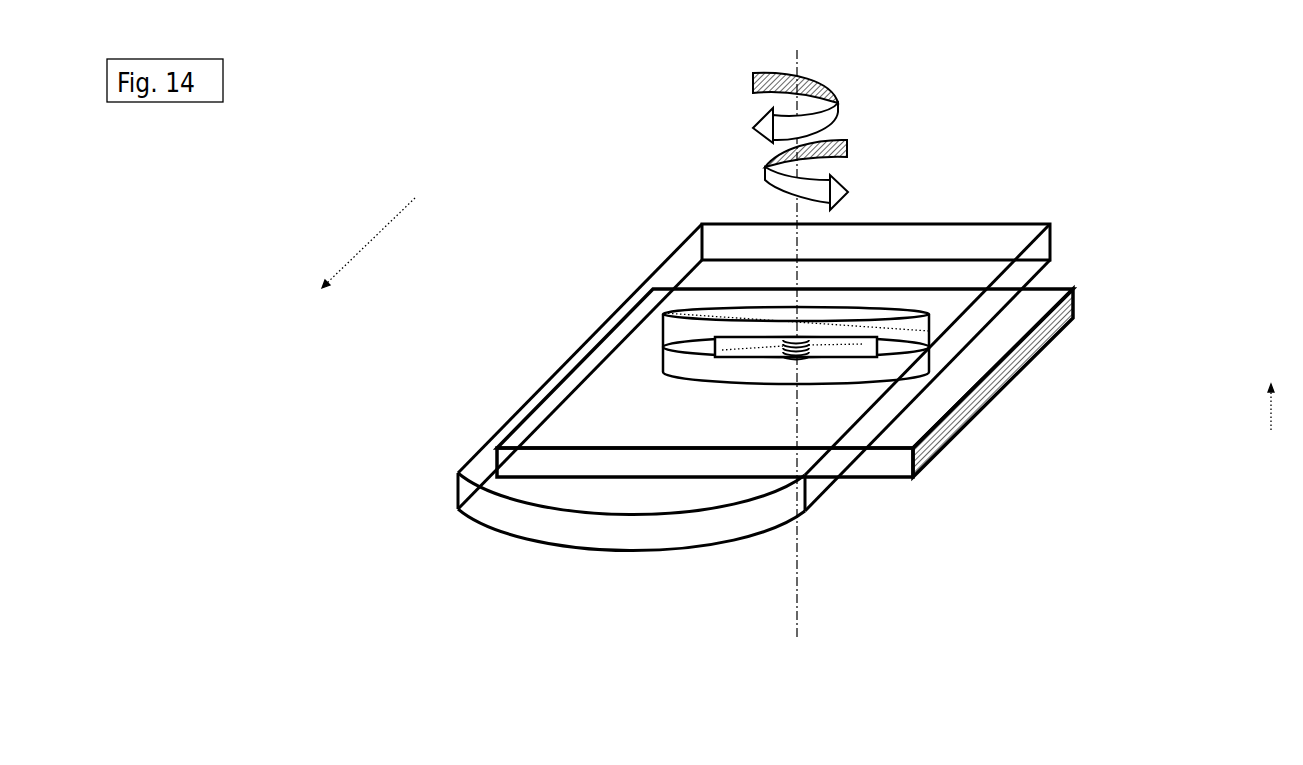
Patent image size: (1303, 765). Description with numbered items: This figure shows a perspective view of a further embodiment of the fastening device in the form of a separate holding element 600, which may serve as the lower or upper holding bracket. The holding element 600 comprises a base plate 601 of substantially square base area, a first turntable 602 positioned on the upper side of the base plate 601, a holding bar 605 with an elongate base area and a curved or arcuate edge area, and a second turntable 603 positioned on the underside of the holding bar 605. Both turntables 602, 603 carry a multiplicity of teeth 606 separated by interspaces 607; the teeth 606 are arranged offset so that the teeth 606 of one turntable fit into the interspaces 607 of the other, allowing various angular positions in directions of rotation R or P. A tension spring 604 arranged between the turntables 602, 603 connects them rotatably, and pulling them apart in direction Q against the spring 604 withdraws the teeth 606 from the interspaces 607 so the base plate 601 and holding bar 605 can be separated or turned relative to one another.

The holding element 600 is at (803, 345).
The base plate 601 is at (940, 422).
The first turntable 602 is at (853, 369).
The second turntable 603 is at (665, 322).
The spring 604 is at (714, 350).
The holding bar 605 is at (667, 540).
The teeth 606 is at (705, 355).
The interspaces 607 is at (870, 344).